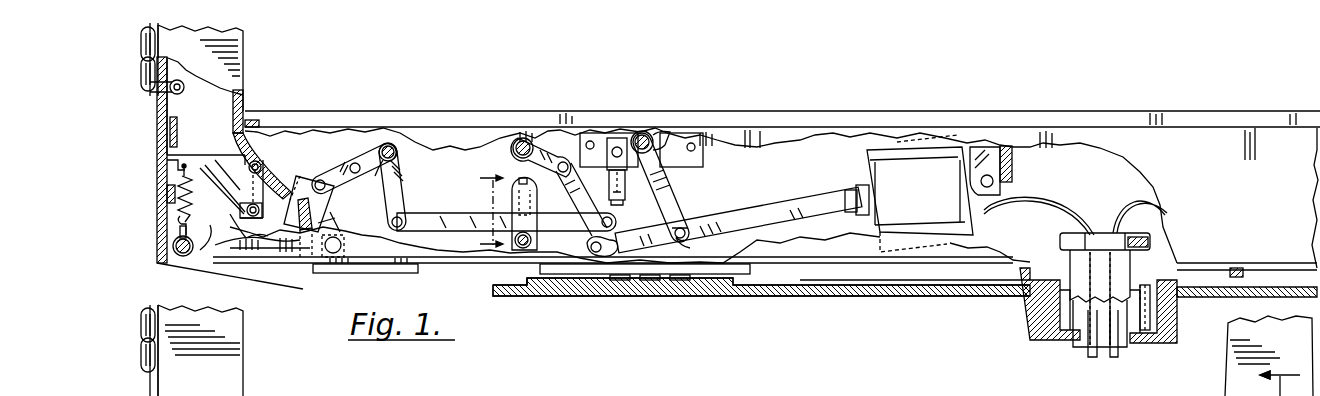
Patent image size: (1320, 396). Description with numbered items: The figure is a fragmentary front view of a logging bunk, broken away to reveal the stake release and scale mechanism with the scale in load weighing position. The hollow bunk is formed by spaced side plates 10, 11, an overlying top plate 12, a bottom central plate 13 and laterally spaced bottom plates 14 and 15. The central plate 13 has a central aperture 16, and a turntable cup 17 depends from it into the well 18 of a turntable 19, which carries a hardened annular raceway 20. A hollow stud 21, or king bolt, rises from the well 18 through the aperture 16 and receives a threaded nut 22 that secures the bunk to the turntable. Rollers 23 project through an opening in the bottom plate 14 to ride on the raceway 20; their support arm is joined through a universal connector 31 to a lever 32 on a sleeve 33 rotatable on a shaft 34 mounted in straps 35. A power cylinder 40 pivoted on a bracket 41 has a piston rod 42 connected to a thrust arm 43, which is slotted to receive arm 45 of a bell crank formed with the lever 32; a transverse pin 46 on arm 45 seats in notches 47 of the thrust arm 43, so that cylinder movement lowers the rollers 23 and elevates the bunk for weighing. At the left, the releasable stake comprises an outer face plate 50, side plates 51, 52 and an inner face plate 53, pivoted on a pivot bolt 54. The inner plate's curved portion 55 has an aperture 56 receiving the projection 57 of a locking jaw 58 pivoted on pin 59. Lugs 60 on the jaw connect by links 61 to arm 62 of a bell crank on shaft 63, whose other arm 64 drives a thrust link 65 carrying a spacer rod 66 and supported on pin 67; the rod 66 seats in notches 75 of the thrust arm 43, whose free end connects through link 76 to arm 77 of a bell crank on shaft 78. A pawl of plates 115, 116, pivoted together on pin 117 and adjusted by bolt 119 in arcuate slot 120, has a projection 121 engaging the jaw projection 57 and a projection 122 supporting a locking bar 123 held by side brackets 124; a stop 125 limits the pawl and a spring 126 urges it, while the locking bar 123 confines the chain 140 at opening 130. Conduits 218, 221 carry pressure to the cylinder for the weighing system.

The side plate 10 is at (1268, 130).
The side plate 11 is at (790, 128).
The top plate 12 is at (1218, 111).
The bottom central plate 13 is at (1243, 275).
The bottom plate 14 is at (750, 272).
The bottom plate 15 is at (380, 270).
The central aperture 16 is at (1060, 262).
The turntable cup 17 is at (1152, 318).
The well 18 is at (1030, 320).
The turntable 19 is at (897, 295).
The annular raceway 20 is at (718, 292).
The hollow stud 21 is at (1130, 260).
The threaded nut 22 is at (1072, 233).
The rollers 23 is at (680, 282).
The universal connector 31 is at (624, 195).
The lever 32 is at (625, 133).
The sleeve 33 is at (662, 130).
The shaft 34 is at (645, 131).
The straps 35 is at (705, 156).
The power cylinder 40 is at (867, 156).
The bracket 41 is at (1013, 172).
The piston rod 42 is at (846, 192).
The thrust arm 43 is at (762, 210).
The arm 45 is at (678, 180).
The transverse pin 46 is at (684, 228).
The notches 47 is at (684, 242).
The outer face plate 50 is at (157, 135).
The side plate 51 is at (243, 58).
The side plate 52 is at (240, 92).
The inner face plate 53 is at (246, 118).
The pivot bolt 54 is at (190, 258).
The curved portion 55 is at (262, 152).
The aperture 56 is at (298, 186).
The projection 57 is at (298, 212).
The locking jaw 58 is at (322, 221).
The pin 59 is at (343, 246).
The lugs 60 is at (326, 186).
The links 61 is at (336, 168).
The bell crank arm 62 is at (377, 178).
The shaft 63 is at (390, 143).
The bell crank arm 64 is at (404, 194).
The thrust link 65 is at (442, 211).
The spacer rod 66 is at (613, 223).
The pin 67 is at (533, 242).
The notches 75 is at (612, 250).
The link 76 is at (568, 193).
The bell crank arm 77 is at (548, 150).
The shaft 78 is at (524, 138).
The pawl plate 115 is at (197, 199).
The pawl plate 116 is at (262, 246).
The pivot pin 117 is at (250, 164).
The bolt 119 is at (244, 225).
The arcuate slot 120 is at (197, 227).
The projection 121 is at (268, 205).
The projection 122 is at (167, 161).
The locking bar 123 is at (176, 154).
The side brackets 124 is at (178, 128).
The stop 125 is at (166, 205).
The spring 126 is at (180, 175).
The opening 130 is at (163, 98).
The chain 140 is at (152, 92).
The conduit 218 is at (1048, 198).
The conduit 221 is at (1135, 210).